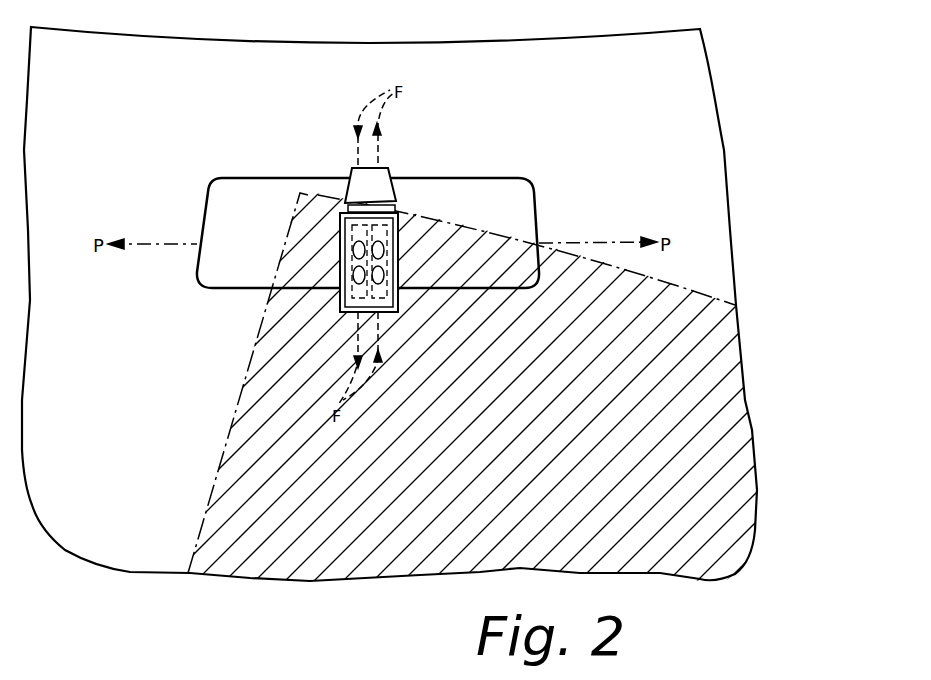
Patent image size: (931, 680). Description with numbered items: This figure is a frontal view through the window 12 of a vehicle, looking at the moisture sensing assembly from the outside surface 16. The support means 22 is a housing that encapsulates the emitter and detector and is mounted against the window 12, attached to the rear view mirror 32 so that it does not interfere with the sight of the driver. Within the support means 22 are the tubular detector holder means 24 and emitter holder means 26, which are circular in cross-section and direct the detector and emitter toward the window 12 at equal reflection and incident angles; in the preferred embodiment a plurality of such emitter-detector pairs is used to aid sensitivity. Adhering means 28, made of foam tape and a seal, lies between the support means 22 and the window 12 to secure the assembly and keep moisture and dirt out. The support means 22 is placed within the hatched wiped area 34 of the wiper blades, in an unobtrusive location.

The window 12 is at (604, 38).
The outside surface 16 is at (338, 65).
The support means 22 is at (360, 280).
The detector holder means 24 is at (353, 250).
The emitter holder means 26 is at (353, 276).
The adhering means 28 is at (346, 308).
The rear view mirror 32 is at (405, 178).
The wiped area 34 is at (240, 400).